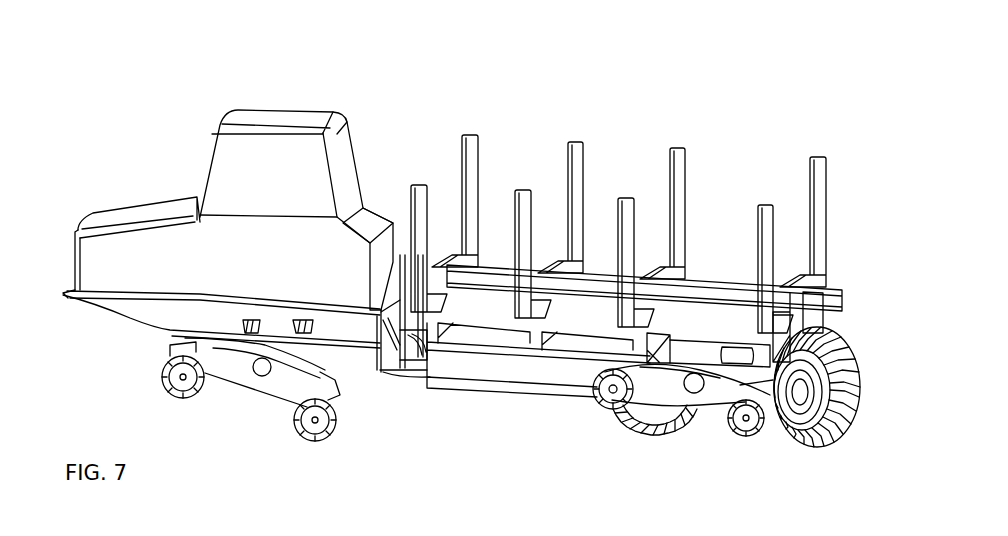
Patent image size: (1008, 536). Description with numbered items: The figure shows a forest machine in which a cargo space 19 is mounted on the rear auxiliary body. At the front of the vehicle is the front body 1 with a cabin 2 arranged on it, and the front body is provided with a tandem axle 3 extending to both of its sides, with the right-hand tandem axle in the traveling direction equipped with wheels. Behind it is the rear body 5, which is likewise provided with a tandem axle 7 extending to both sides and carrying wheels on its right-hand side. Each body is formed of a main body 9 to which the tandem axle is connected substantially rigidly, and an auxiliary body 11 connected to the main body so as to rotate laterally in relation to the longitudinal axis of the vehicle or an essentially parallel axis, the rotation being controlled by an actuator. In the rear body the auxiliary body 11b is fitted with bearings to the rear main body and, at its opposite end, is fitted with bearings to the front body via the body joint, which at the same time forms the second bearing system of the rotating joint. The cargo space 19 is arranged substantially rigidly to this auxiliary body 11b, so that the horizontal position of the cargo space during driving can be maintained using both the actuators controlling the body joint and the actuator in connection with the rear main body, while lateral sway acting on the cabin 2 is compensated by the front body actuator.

The front body 1 is at (383, 109).
The cabin 2 is at (263, 115).
The tandem axle 3 is at (260, 378).
The rear body 5 is at (620, 120).
The tandem axle 7 is at (694, 393).
The main body 9 is at (375, 383).
The auxiliary body 11 is at (158, 320).
The auxiliary body 11b is at (470, 360).
The cargo space 19 is at (697, 293).